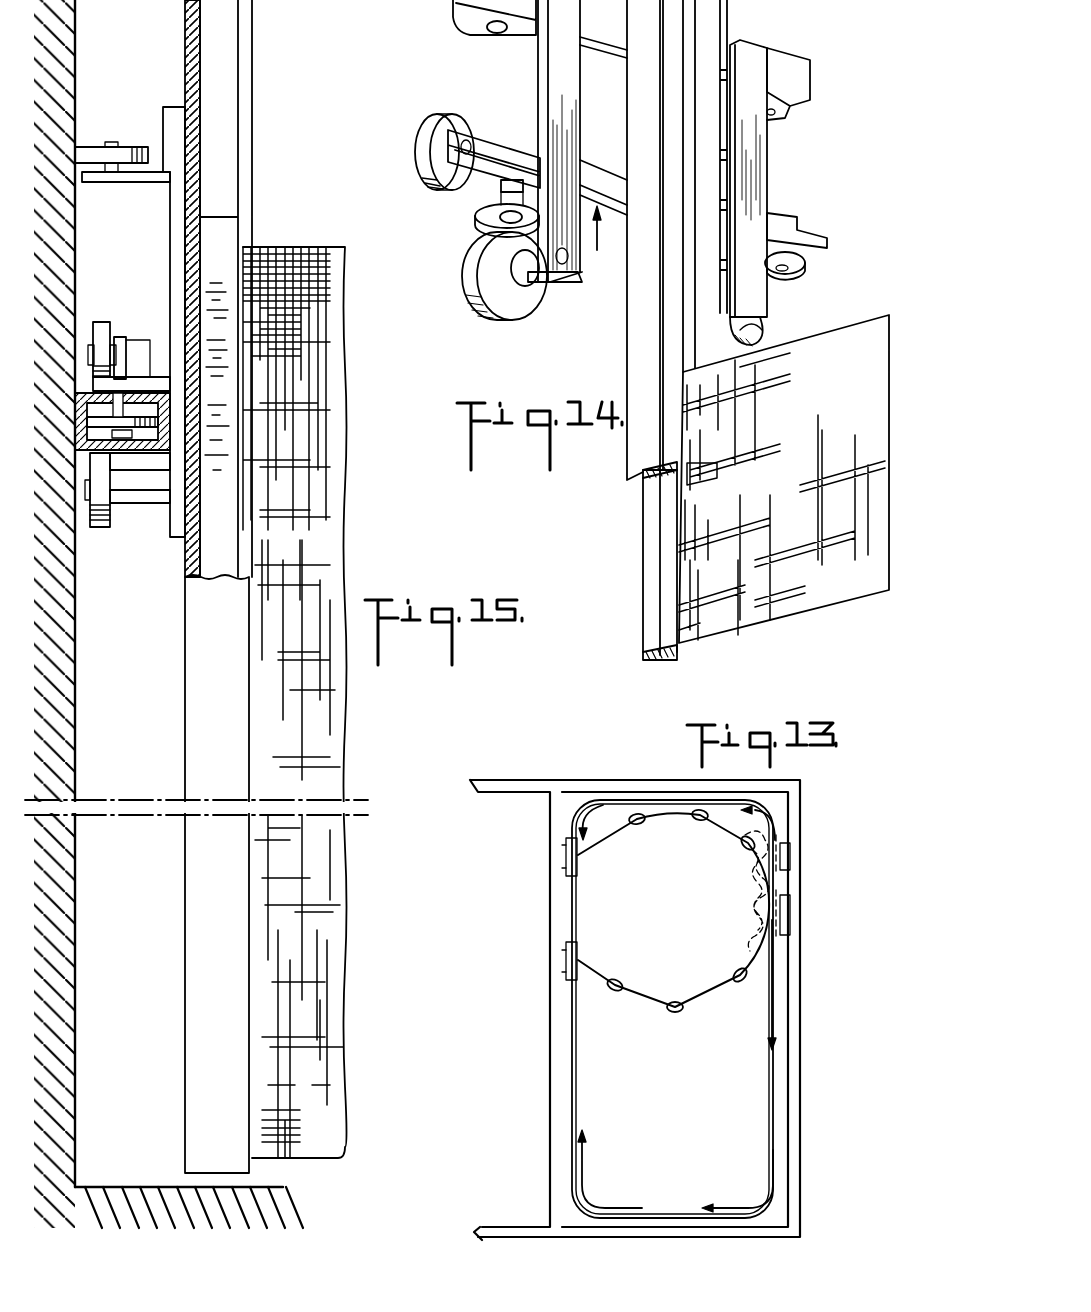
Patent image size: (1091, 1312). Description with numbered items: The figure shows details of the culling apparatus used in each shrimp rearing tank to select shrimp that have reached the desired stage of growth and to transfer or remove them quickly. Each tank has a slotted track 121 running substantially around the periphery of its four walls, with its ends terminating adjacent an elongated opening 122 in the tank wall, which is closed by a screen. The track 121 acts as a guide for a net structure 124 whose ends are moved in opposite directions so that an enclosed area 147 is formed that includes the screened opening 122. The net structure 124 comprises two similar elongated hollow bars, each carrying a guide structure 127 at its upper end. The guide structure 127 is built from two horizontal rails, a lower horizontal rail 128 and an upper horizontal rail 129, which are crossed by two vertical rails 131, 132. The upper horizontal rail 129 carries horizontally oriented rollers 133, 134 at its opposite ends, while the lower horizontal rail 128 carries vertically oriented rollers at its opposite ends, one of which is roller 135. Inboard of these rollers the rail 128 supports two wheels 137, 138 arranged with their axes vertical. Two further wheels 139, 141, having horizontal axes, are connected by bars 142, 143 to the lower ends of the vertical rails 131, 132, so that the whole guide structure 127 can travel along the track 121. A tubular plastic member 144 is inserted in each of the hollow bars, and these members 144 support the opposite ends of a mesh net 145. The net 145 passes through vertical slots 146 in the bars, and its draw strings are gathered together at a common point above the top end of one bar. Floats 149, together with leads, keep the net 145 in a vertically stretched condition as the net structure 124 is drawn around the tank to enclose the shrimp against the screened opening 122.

In FIG. 15, the slotted track 121 is at (160, 450).
In FIG. 13, the elongated opening 122 is at (567, 912).
In FIG. 13, the net structure 124 is at (635, 1008).
In FIG. 14, the guide structure 127 is at (604, 247).
In FIG. 15, the lower horizontal rail 128 is at (143, 375).
In FIG. 14, the lower horizontal rail 128 is at (480, 178).
In FIG. 15, the upper horizontal rail 129 is at (163, 113).
In FIG. 14, the vertical rail 131 is at (548, 98).
In FIG. 14, the vertical rail 132 is at (767, 183).
In FIG. 14, the horizontally oriented roller 133 is at (430, 118).
In FIG. 14, the horizontally oriented roller 134 is at (800, 115).
In FIG. 15, the vertically oriented roller 135 is at (100, 320).
In FIG. 14, the wheel 137 is at (482, 225).
In FIG. 15, the wheel 138 is at (78, 425).
In FIG. 14, the wheel 138 is at (790, 273).
In FIG. 15, the wheel 139 is at (98, 527).
In FIG. 14, the wheel 139 is at (485, 292).
In FIG. 14, the wheel 141 is at (748, 335).
In FIG. 14, the bar 142 is at (545, 283).
In FIG. 14, the bar 143 is at (760, 320).
In FIG. 15, the tubular plastic member 144 is at (228, 227).
In FIG. 14, the tubular plastic member 144 is at (645, 604).
In FIG. 15, the mesh net 145 is at (345, 285).
In FIG. 14, the mesh net 145 is at (815, 612).
In FIG. 13, the mesh net 145 is at (655, 1008).
In FIG. 14, the vertical slot 146 is at (690, 7).
In FIG. 13, the enclosed area 147 is at (705, 990).
In FIG. 13, the float 149 is at (745, 843).